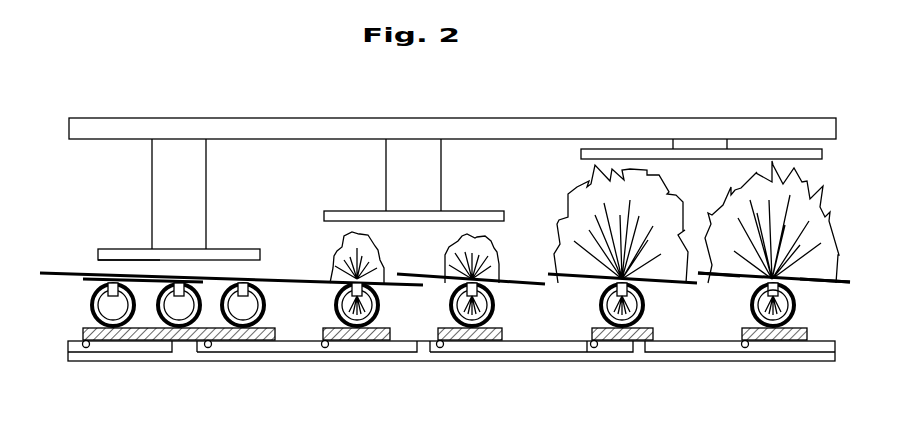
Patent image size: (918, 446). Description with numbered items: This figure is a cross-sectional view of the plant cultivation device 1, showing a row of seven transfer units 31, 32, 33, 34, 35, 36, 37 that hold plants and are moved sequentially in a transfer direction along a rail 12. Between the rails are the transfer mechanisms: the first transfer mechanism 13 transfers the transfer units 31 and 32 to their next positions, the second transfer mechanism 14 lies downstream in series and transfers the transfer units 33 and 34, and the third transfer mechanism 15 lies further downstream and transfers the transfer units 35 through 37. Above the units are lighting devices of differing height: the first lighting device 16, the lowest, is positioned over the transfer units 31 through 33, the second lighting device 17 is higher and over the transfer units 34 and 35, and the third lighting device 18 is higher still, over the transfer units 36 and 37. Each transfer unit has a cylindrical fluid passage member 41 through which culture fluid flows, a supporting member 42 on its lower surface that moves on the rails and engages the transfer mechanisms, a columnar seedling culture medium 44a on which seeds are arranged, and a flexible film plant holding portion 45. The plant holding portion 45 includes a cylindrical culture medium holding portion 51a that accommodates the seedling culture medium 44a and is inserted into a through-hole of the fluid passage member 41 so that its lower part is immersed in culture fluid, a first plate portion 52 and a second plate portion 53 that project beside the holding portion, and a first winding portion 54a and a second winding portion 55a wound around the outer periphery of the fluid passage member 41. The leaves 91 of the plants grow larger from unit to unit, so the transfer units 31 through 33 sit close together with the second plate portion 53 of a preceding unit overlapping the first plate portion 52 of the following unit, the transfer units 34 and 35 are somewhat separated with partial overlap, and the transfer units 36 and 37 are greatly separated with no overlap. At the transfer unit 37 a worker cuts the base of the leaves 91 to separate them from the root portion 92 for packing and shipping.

The plant cultivation device 1 is at (827, 85).
The rail 12 is at (517, 361).
The first transfer mechanism 13 is at (152, 352).
The second transfer mechanism 14 is at (307, 361).
The third transfer mechanism 15 is at (557, 352).
The first lighting device 16 is at (239, 250).
The second lighting device 17 is at (482, 211).
The third lighting device 18 is at (758, 149).
The transfer unit 31 is at (71, 350).
The transfer unit 32 is at (190, 361).
The transfer unit 33 is at (250, 361).
The transfer unit 34 is at (367, 361).
The transfer unit 35 is at (477, 352).
The transfer unit 36 is at (642, 352).
The transfer unit 37 is at (783, 350).
The fluid passage member 41 is at (90, 306).
The supporting member 42 is at (83, 331).
The seedling culture medium 44a is at (117, 255).
The plant holding portion 45 is at (825, 270).
The culture medium holding portion 51a is at (810, 304).
The first plate portion 52 is at (832, 277).
The second plate portion 53 is at (727, 281).
The first winding portion 54a is at (803, 320).
The second winding portion 55a is at (743, 313).
The leaves 91 is at (822, 184).
The root portion 92 is at (785, 308).